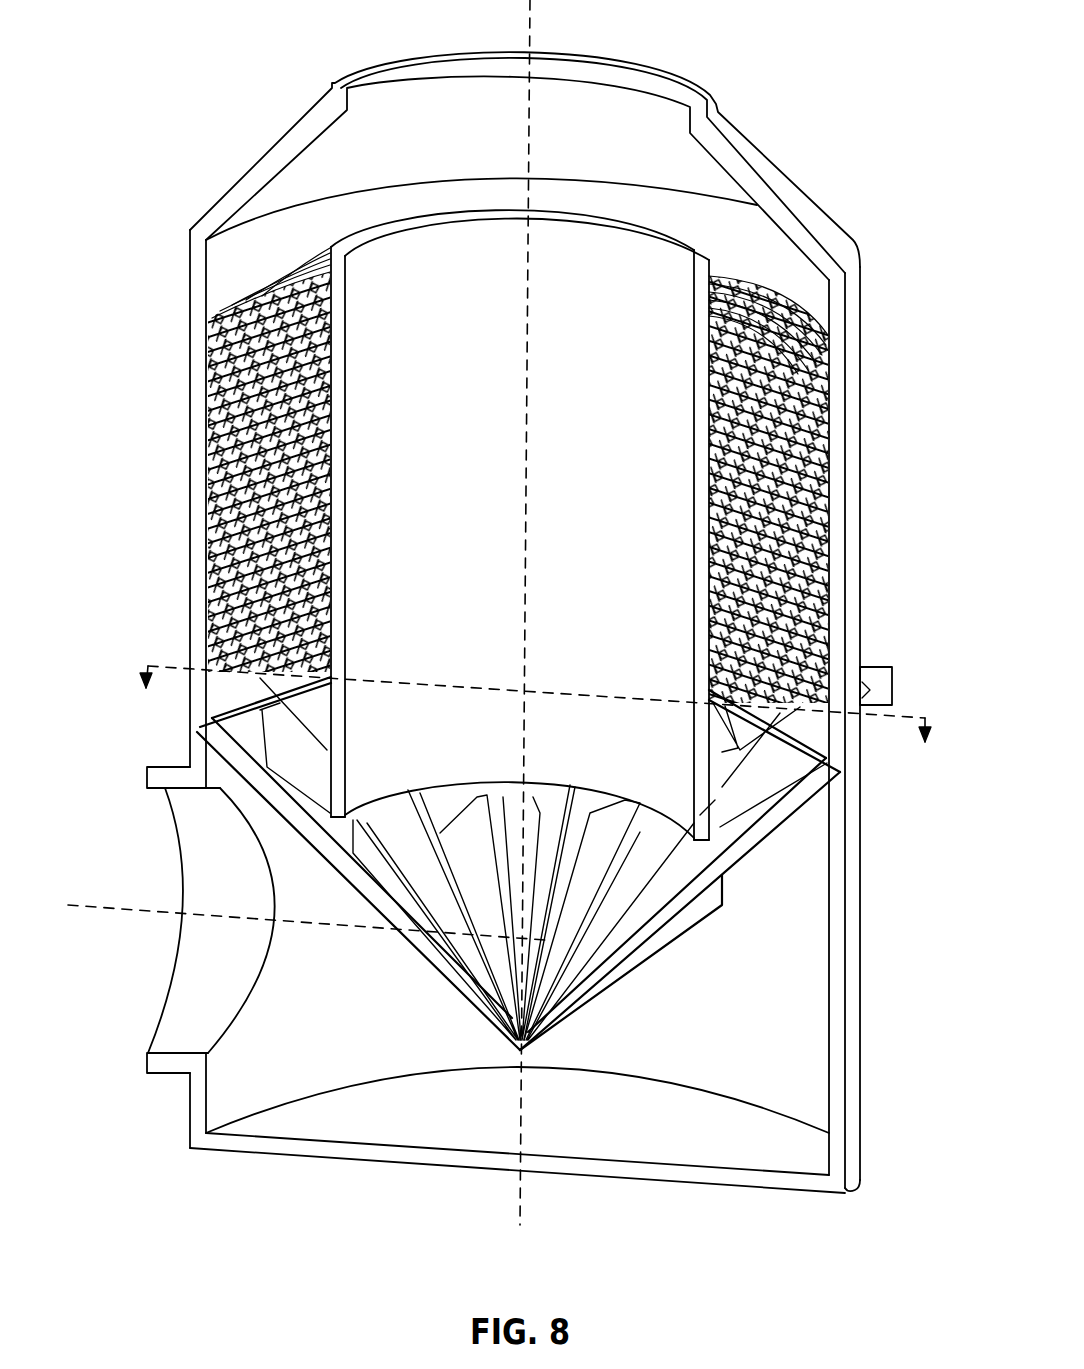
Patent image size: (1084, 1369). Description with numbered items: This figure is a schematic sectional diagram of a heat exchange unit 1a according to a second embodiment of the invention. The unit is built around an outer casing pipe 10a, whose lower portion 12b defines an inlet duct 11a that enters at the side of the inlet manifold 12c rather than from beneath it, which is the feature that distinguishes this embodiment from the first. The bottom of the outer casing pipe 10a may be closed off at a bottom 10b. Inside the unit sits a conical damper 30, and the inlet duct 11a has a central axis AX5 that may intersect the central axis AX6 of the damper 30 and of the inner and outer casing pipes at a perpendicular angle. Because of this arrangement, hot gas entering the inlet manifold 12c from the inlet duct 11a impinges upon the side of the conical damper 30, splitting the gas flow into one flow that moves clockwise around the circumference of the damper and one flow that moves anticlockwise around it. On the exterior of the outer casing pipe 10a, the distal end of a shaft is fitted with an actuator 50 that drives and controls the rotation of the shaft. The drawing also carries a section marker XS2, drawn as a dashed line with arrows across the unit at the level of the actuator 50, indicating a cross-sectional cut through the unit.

The heat exchange unit 1a is at (199, 129).
The outer casing pipe 10a is at (198, 518).
The bottom 10b is at (357, 1125).
The inlet duct 11a is at (167, 1063).
The lower portion 12b is at (838, 1083).
The inlet manifold 12c is at (388, 1035).
The damper 30 is at (722, 858).
The actuator 50 is at (878, 667).
The central axis of the inlet duct AX5 is at (148, 912).
The central axis of the damper AX6 is at (532, 12).
The cross-section line XS2 is at (894, 722).